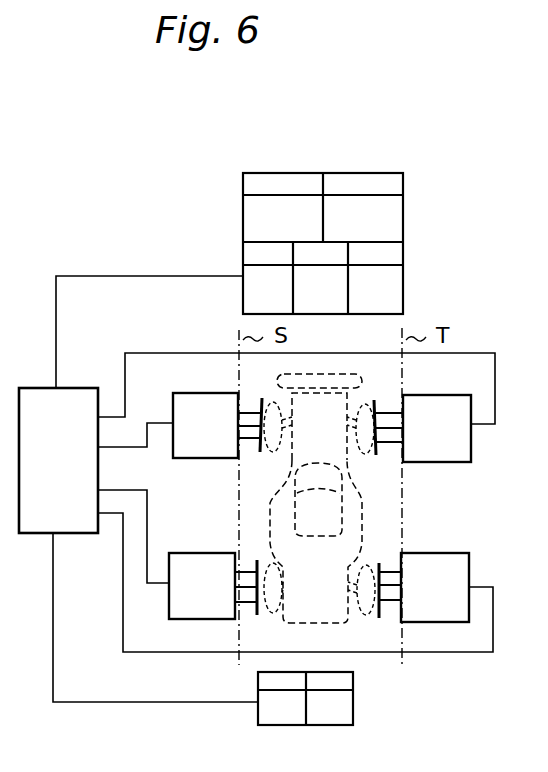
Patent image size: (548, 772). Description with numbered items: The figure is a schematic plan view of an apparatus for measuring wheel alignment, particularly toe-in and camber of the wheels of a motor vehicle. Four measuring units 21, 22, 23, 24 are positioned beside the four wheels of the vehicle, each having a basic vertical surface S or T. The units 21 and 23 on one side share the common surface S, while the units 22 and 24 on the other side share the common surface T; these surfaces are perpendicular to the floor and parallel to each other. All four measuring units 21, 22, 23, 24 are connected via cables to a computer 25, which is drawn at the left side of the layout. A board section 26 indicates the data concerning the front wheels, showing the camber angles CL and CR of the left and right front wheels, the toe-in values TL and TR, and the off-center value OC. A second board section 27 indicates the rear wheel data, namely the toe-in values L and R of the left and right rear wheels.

The measuring unit 21 is at (217, 425).
The measuring unit 22 is at (423, 428).
The measuring unit 23 is at (213, 586).
The measuring unit 24 is at (424, 587).
The computer 25 is at (58, 460).
The board section 26 is at (406, 233).
The board section 27 is at (355, 711).